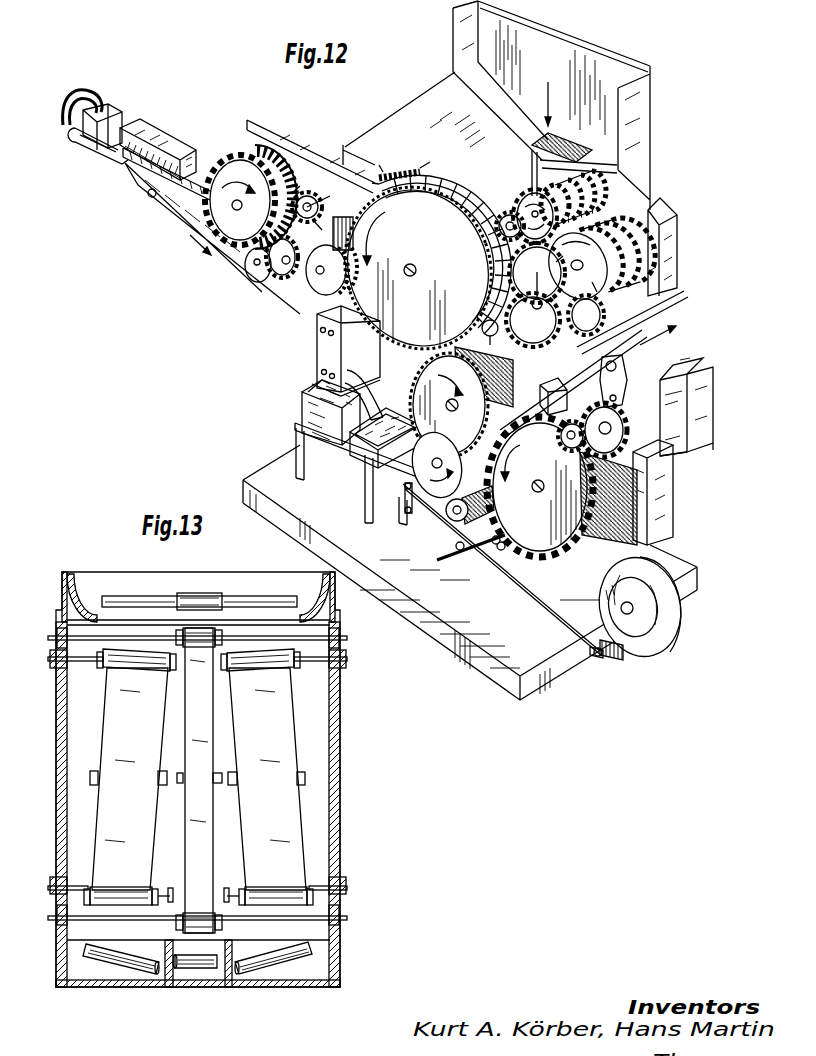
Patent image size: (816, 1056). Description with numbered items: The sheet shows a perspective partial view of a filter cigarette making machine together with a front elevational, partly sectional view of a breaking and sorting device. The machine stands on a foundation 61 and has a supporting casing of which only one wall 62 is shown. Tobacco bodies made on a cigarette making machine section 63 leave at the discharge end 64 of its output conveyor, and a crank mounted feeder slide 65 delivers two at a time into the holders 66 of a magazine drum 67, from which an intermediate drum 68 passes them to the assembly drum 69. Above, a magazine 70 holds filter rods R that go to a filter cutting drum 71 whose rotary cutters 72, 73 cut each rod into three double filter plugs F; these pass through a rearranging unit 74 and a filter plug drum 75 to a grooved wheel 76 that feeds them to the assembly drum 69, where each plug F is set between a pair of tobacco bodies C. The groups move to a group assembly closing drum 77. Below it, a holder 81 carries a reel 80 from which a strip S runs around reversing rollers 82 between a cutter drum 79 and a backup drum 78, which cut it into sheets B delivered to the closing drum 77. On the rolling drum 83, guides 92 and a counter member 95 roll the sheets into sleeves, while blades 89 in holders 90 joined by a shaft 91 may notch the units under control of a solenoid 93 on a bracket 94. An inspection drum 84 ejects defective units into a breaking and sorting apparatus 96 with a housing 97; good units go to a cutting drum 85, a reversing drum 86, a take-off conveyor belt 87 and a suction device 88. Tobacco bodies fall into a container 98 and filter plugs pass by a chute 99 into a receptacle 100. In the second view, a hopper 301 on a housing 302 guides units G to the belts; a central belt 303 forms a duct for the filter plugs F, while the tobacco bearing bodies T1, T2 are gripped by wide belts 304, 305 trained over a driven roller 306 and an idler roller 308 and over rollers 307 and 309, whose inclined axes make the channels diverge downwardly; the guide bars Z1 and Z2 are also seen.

In FIG. 12, the foundation 61 is at (433, 633).
In FIG. 12, the wall 62 is at (473, 133).
In FIG. 12, the cigarette making machine section 63 is at (690, 440).
In FIG. 12, the discharge end 64 is at (686, 407).
In FIG. 12, the feeder slide 65 is at (628, 364).
In FIG. 12, the holders 66 is at (662, 470).
In FIG. 12, the magazine drum 67 is at (620, 456).
In FIG. 12, the intermediate drum 68 is at (570, 450).
In FIG. 12, the assembly drum 69 is at (565, 534).
In FIG. 12, the magazine 70 is at (638, 123).
In FIG. 12, the filter cutting drum 71 is at (583, 188).
In FIG. 12, the rotary cutter 72 is at (523, 197).
In FIG. 12, the rotary cutter 73 is at (500, 213).
In FIG. 12, the rearranging unit 74 is at (593, 297).
In FIG. 12, the filter plug drum 75 is at (534, 287).
In FIG. 12, the grooved wheel 76 is at (535, 320).
In FIG. 12, the group assembly closing drum 77 is at (470, 439).
In FIG. 12, the backup drum 78 is at (436, 465).
In FIG. 12, the cutter drum 79 is at (447, 506).
In FIG. 12, the reel 80 is at (657, 635).
In FIG. 12, the holder 81 is at (617, 597).
In FIG. 12, the reversing rollers 82 is at (404, 482).
In FIG. 12, the rolling drum 83 is at (416, 241).
In FIG. 12, the inspection drum 84 is at (318, 292).
In FIG. 12, the cutting drum 85 is at (282, 282).
In FIG. 12, the reversing drum 86 is at (259, 235).
In FIG. 12, the take-off conveyor belt 87 is at (196, 212).
In FIG. 12, the suction device 88 is at (172, 143).
In FIG. 12, the blades 89 is at (473, 329).
In FIG. 12, the holders 90 is at (454, 368).
In FIG. 12, the shaft 91 is at (536, 309).
In FIG. 12, the guides 92 is at (396, 166).
In FIG. 12, the solenoid 93 is at (543, 426).
In FIG. 12, the bracket 94 is at (663, 325).
In FIG. 12, the counter member 95 is at (477, 280).
In FIG. 12, the breaking and sorting apparatus 96 is at (318, 326).
In FIG. 12, the housing 97 is at (320, 384).
In FIG. 12, the container 98 is at (302, 412).
In FIG. 12, the chute 99 is at (358, 400).
In FIG. 12, the receptacle 100 is at (358, 456).
In FIG. 12, the filter rods R is at (546, 89).
In FIG. 12, the strip S is at (553, 613).
In FIG. 12, the sheets B is at (512, 503).
In FIG. 12, the tobacco bodies C is at (492, 408).
In FIG. 12, the double filter plug F is at (620, 309).
In FIG. 13, the double filter plug F is at (178, 788).
In FIG. 12, the cigarette Z1 is at (236, 292).
In FIG. 12, the cigarette Z2 is at (343, 150).
In FIG. 13, the assembled groups or units G is at (147, 590).
In FIG. 13, the tobacco bearing body T1 is at (88, 970).
In FIG. 13, the tobacco bearing body T2 is at (298, 970).
In FIG. 13, the hopper 301 is at (270, 572).
In FIG. 13, the housing 302 is at (338, 774).
In FIG. 13, the central belt 303 is at (215, 707).
In FIG. 13, the belt 304 is at (149, 727).
In FIG. 13, the belt 305 is at (280, 727).
In FIG. 13, the driven roller 306 is at (94, 877).
In FIG. 13, the roller 307 is at (306, 877).
In FIG. 13, the idler roller 308 is at (103, 674).
In FIG. 13, the roller 309 is at (290, 675).